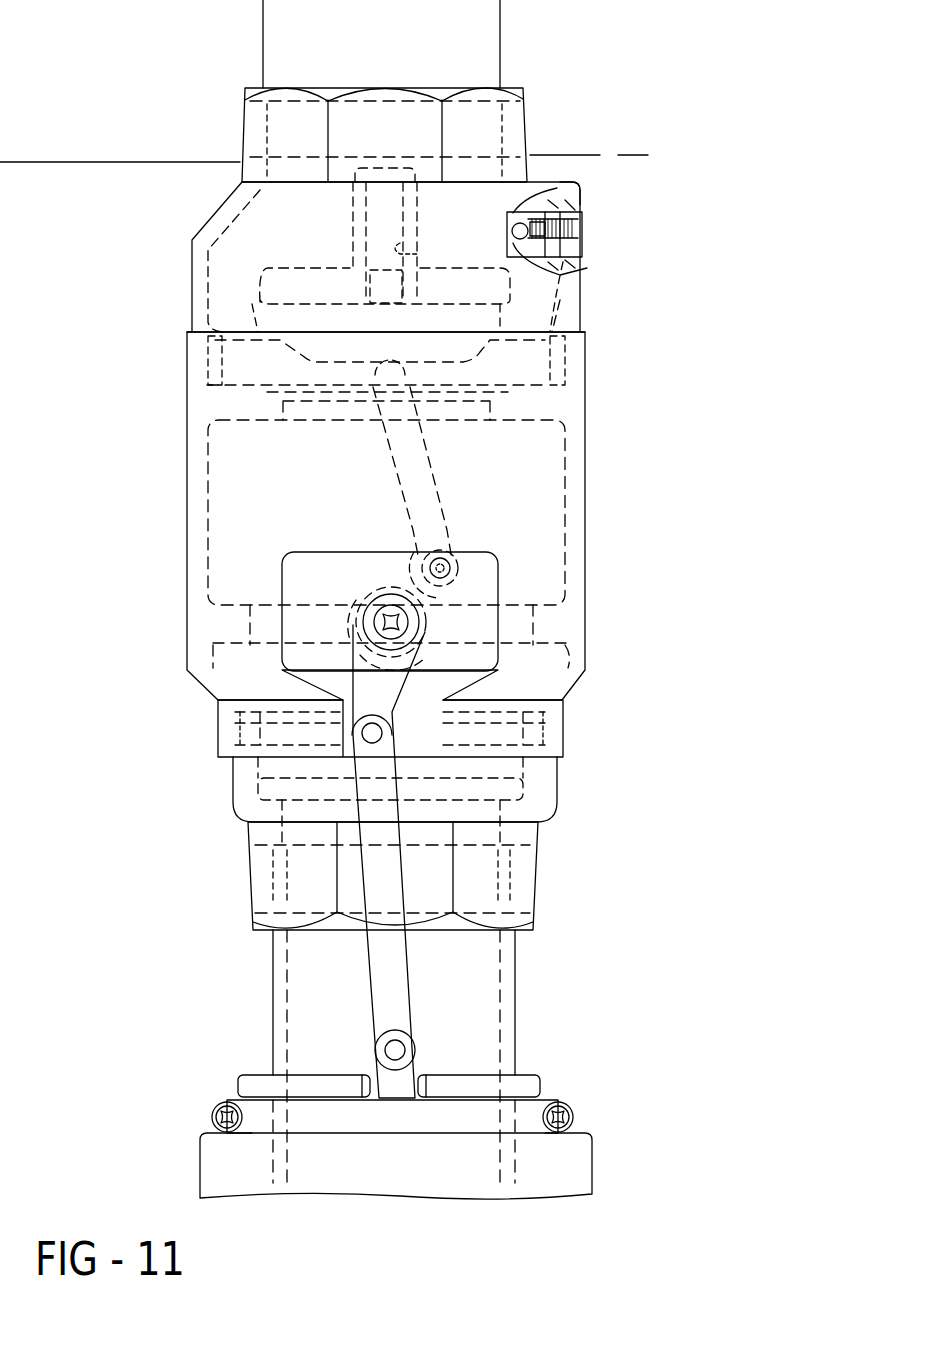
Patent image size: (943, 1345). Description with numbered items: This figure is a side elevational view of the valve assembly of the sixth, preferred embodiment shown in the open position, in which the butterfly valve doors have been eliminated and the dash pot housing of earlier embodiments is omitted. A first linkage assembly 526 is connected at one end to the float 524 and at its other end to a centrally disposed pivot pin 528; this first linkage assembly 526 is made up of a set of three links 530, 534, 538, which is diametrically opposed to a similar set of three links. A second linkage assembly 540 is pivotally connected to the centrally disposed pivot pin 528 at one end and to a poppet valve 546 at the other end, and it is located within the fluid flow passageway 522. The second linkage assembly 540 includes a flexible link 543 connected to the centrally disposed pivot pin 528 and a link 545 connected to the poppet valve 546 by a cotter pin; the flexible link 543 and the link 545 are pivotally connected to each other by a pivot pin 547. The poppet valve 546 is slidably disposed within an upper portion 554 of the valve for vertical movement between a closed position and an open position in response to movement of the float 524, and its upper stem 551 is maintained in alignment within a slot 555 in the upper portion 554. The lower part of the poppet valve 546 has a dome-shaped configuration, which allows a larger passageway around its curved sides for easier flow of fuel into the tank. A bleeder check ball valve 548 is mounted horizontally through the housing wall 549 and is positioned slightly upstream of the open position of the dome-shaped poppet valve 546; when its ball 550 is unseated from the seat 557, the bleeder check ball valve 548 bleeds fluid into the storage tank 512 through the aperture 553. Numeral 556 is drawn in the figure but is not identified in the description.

The storage tank 512 is at (150, 162).
The fluid flow passageway 522 is at (565, 486).
The float 524 is at (590, 1148).
The first linkage assembly 526 is at (415, 968).
The centrally disposed pivot pin 528 is at (410, 622).
The link 530 is at (418, 1085).
The link 534 is at (410, 1010).
The link 538 is at (440, 696).
The second linkage assembly 540 is at (437, 468).
The flexible link 543 is at (412, 567).
The link 545 is at (427, 445).
The poppet valve 546 is at (490, 350).
The pivot pin 547 is at (458, 583).
The bleeder check ball valve 548 is at (587, 207).
The housing wall 549 is at (583, 322).
The ball 550 is at (507, 227).
The upper stem 551 is at (367, 203).
The aperture 553 is at (583, 232).
The upper portion 554 is at (282, 261).
The slot 555 is at (418, 249).
The ball 556 is at (575, 232).
The seat 557 is at (507, 220).